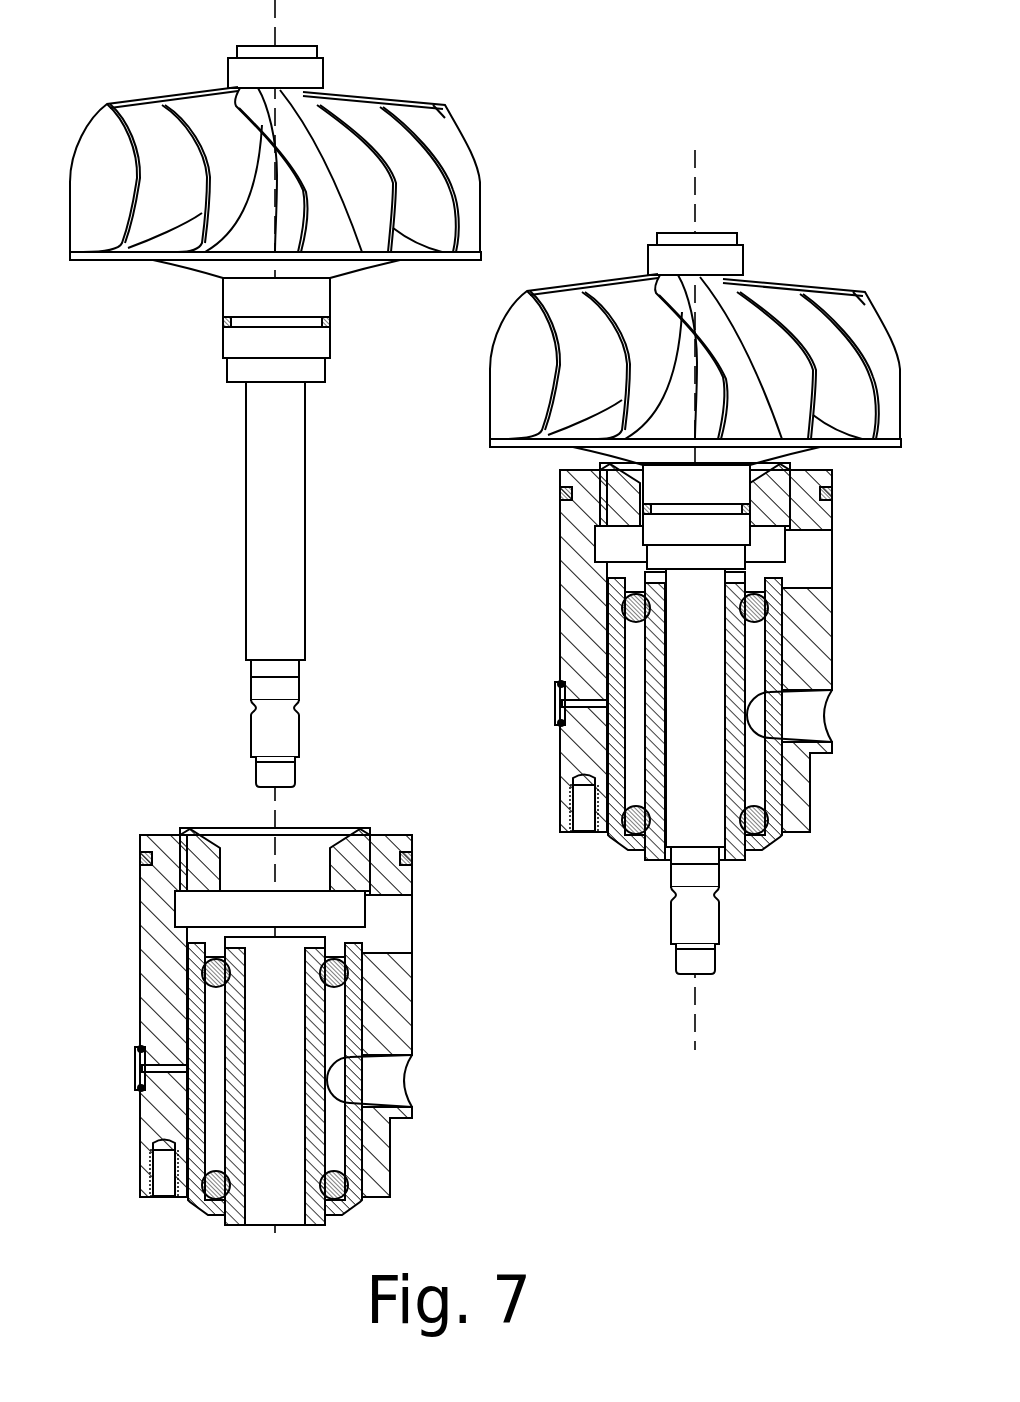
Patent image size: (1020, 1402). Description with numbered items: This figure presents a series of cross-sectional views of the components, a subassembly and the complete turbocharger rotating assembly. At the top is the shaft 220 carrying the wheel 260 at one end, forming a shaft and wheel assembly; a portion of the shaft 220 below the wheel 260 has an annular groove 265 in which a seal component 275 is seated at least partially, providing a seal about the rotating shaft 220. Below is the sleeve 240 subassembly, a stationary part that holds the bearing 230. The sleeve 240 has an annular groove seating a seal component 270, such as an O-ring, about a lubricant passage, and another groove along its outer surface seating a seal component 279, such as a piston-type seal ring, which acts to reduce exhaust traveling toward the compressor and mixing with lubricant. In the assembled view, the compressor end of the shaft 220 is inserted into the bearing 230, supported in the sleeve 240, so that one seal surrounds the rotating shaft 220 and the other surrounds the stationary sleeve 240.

The turbine wheel 260 is at (325, 83).
The seal component 275 is at (222, 322).
The annular groove 265 is at (250, 323).
The shaft 220 is at (296, 546).
The sleeve 240 is at (132, 808).
The seal component 279 is at (138, 860).
The seal component 270 is at (138, 1048).
The bearing 230 is at (213, 1227).